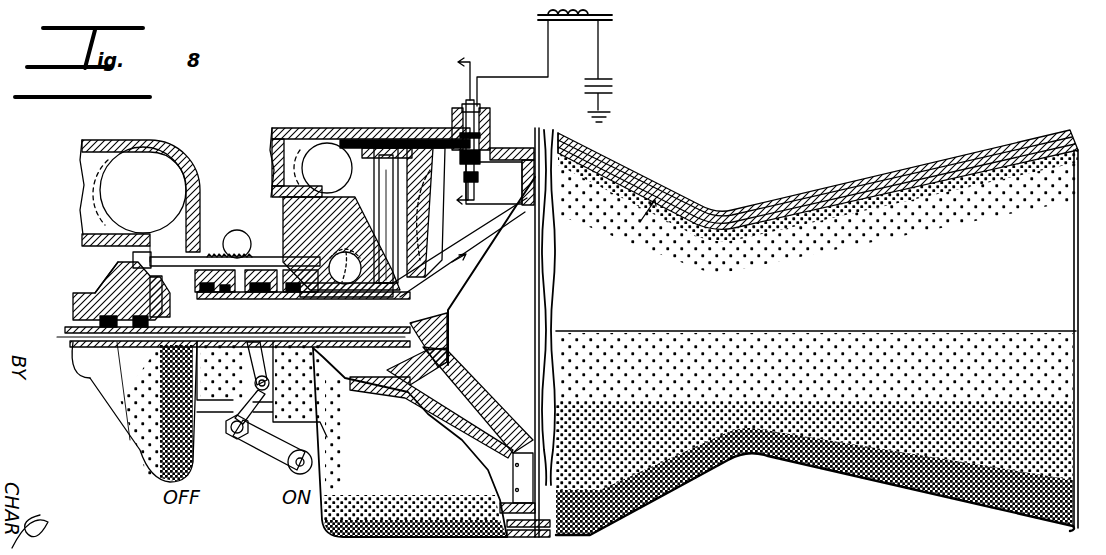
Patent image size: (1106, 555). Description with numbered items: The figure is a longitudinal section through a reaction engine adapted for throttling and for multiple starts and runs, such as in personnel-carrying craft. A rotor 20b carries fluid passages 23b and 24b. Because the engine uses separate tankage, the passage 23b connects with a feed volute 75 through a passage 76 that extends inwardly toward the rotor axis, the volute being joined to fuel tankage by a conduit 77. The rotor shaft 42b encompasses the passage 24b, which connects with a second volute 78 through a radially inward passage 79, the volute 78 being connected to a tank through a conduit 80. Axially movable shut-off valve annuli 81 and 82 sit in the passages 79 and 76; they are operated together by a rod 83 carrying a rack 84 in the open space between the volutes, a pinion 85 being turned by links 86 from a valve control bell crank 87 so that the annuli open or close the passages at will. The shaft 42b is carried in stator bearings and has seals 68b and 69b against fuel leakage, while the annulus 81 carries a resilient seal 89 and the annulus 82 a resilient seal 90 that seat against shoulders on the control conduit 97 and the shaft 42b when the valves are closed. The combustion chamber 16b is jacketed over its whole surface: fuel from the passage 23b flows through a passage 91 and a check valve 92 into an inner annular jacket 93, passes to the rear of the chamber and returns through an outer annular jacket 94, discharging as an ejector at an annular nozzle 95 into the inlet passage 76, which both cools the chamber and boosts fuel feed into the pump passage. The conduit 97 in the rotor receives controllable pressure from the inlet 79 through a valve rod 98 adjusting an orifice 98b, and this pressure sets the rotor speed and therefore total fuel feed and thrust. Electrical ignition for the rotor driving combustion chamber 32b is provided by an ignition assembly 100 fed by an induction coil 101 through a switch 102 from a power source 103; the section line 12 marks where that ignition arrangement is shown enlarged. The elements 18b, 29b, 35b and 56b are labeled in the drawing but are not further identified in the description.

The electrode lead 12 is at (452, 133).
The combustion chamber 16b is at (635, 216).
The nozzle throat 18b is at (750, 238).
The rotor 20b is at (474, 291).
The fluid passage 23b is at (420, 255).
The rotor passage 24b is at (371, 295).
The flexible seal 29b is at (545, 195).
The rotor driving combustion chamber 32b is at (430, 446).
The base plate 35b is at (517, 478).
The rotor shaft 42b is at (240, 298).
The inner chamber wall 56b is at (522, 172).
The seal 68b is at (200, 300).
The seal 69b is at (284, 300).
The feed volute 75 is at (323, 168).
The passage 76 is at (368, 265).
The conduit 77 is at (276, 158).
The volute 78 is at (172, 150).
The radially inwardly extending passage 79 is at (170, 250).
The conduit 80 is at (92, 242).
The shut-off valve annulus 81 is at (170, 318).
The shut-off valve annulus 82 is at (360, 266).
The rod 83 is at (272, 255).
The rack 84 is at (215, 254).
The pinion 85 is at (238, 230).
The links 86 is at (248, 365).
The valve control bell crank 87 is at (268, 457).
The resilient seal 89 is at (112, 347).
The resilient seal 90 is at (350, 300).
The passage 91 is at (398, 150).
The check valve 92 is at (438, 150).
The inner annular jacket 93 is at (640, 190).
The outer annular jacket 94 is at (698, 210).
The annular nozzle 95 is at (372, 150).
The control conduit 97 is at (343, 352).
The valve rod 98 is at (60, 340).
The orifice 98b is at (170, 343).
The ignition assembly 100 is at (492, 112).
The induction coil 101 is at (556, 30).
The switch 102 is at (600, 40).
The power source 103 is at (598, 78).